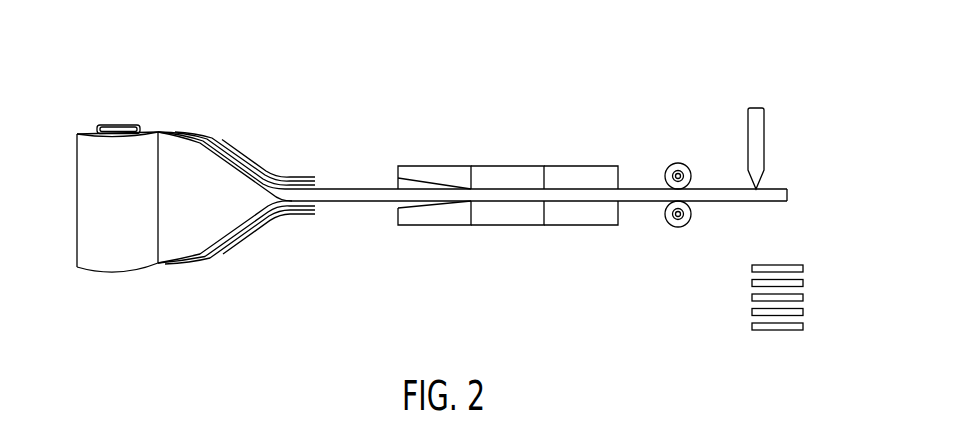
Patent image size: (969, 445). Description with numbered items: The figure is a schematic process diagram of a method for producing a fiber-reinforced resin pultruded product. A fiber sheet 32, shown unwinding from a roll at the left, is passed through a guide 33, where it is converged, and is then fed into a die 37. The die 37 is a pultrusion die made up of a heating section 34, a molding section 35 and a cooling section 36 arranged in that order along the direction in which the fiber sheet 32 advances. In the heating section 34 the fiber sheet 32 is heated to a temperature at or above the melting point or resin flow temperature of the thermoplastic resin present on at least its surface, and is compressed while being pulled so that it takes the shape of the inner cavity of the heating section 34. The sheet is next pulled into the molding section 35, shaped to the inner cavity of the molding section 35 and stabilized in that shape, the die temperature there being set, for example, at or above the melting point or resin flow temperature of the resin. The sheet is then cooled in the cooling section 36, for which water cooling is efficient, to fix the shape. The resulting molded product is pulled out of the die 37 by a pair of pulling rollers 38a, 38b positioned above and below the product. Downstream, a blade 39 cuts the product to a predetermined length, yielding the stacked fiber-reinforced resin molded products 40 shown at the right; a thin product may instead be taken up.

The fiber sheet 32 is at (78, 130).
The guide 33 is at (259, 160).
The heating section 34 is at (433, 165).
The molding section 35 is at (505, 165).
The cooling section 36 is at (581, 165).
The die 37 is at (508, 138).
The pulling roller 38a is at (674, 163).
The pulling roller 38b is at (676, 227).
The blade 39 is at (756, 106).
The fiber-reinforced resin molded product 40 is at (805, 252).